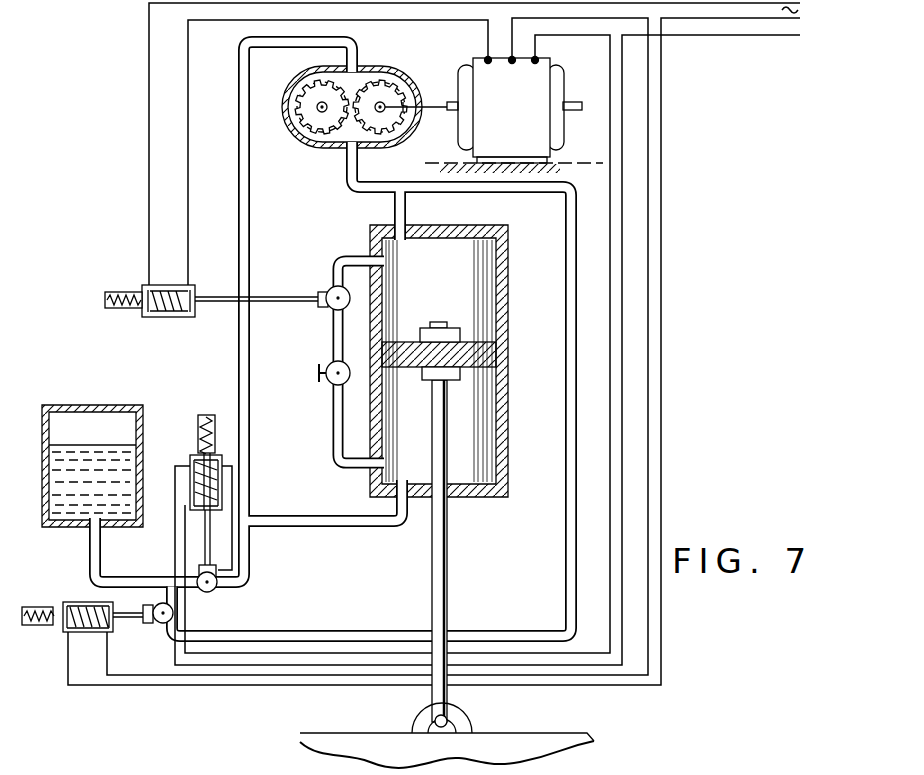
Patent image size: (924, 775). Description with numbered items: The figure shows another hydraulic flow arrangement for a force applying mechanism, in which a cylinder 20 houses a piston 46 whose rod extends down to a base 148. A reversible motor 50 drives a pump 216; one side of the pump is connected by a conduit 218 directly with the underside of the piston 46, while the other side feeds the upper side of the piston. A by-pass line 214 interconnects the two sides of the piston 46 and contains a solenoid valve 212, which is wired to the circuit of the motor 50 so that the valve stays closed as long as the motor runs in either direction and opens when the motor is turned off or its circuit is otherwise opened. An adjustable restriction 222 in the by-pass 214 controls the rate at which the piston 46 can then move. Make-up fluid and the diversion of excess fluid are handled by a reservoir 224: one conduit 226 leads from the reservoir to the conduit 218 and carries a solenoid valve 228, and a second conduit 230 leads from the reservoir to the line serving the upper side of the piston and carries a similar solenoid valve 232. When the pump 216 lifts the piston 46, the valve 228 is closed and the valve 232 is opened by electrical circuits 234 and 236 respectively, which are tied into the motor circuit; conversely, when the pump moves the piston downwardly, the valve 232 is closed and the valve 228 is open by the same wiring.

The hydraulic cylinder 20 is at (405, 207).
The piston 46 is at (480, 342).
The reversible motor 50 is at (540, 72).
The base 148 is at (537, 739).
The solenoid valve 212 is at (330, 288).
The by-pass line 214 is at (332, 423).
The pump 216 is at (367, 68).
The conduit 218 is at (238, 125).
The adjustable restriction 222 is at (332, 364).
The reservoir 224 is at (110, 405).
The conduit 226 is at (217, 590).
The solenoid valve 228 is at (183, 457).
The second conduit 230 is at (367, 625).
The solenoid valve 232 is at (158, 623).
The electrical circuit 234 is at (565, 655).
The electrical circuit 236 is at (487, 676).